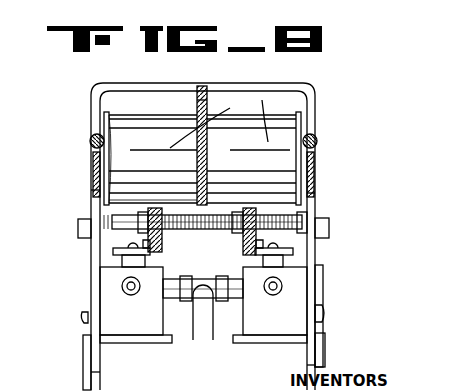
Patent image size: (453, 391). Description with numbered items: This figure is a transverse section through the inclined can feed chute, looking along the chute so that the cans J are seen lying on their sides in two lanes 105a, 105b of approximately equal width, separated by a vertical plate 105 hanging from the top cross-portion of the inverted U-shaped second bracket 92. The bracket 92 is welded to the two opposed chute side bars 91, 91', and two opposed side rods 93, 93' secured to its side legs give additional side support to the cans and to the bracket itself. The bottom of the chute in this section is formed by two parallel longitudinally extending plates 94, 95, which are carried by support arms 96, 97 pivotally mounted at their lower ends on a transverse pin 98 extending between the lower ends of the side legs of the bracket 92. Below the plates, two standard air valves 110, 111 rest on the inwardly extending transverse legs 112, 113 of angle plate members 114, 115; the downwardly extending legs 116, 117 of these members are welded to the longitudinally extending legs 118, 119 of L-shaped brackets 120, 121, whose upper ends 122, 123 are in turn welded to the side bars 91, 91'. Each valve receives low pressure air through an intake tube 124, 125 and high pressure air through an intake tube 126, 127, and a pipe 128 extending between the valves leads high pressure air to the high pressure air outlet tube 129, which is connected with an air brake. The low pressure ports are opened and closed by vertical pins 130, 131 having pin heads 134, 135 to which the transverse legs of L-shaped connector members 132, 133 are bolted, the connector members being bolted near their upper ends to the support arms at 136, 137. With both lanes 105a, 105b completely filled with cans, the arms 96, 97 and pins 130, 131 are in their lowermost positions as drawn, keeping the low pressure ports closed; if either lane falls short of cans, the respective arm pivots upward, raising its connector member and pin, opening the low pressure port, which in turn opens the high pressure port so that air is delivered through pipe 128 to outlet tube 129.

The lane 105a is at (127, 112).
The lane 105b is at (282, 110).
The second bracket 92 is at (211, 72).
The vertical plate 105 is at (196, 100).
The cans J is at (230, 108).
The side rod 93 is at (76, 141).
The side rod 93' is at (332, 141).
The chute side bar 91 is at (74, 173).
The chute side bar 91' is at (334, 173).
The upper end of L-shaped bracket 122 is at (100, 190).
The upper end of L-shaped bracket 123 is at (308, 193).
The plate 94 is at (148, 218).
The plate 95 is at (262, 224).
The support arm 96 is at (163, 232).
The support arm 97 is at (241, 230).
The pin 98 is at (329, 228).
The connection point on support arm 136 is at (147, 237).
The connection point on support arm 137 is at (292, 251).
The pin head 134 is at (120, 257).
The pin head 135 is at (292, 259).
The vertical pin 130 is at (130, 268).
The vertical pin 131 is at (290, 275).
The L-shaped connector member 132 is at (163, 250).
The L-shaped connector member 133 is at (246, 254).
The pipe 128 is at (243, 272).
The high pressure air outlet tube 129 is at (202, 320).
The air valve 110 is at (146, 329).
The air valve 111 is at (280, 329).
The high pressure air intake tube 126 is at (137, 293).
The high pressure air intake tube 127 is at (276, 292).
The transverse leg 112 is at (130, 343).
The transverse leg 113 is at (258, 340).
The angle plate member 114 is at (148, 345).
The angle plate member 115 is at (238, 345).
The downwardly extending leg 116 is at (100, 374).
The downwardly extending leg 117 is at (316, 367).
The longitudinally extending leg 118 is at (92, 297).
The longitudinally extending leg 119 is at (312, 290).
The L-shaped bracket 120 is at (82, 350).
The L-shaped bracket 121 is at (325, 346).
The low pressure air intake tube 124 is at (82, 318).
The low pressure air intake tube 125 is at (322, 313).